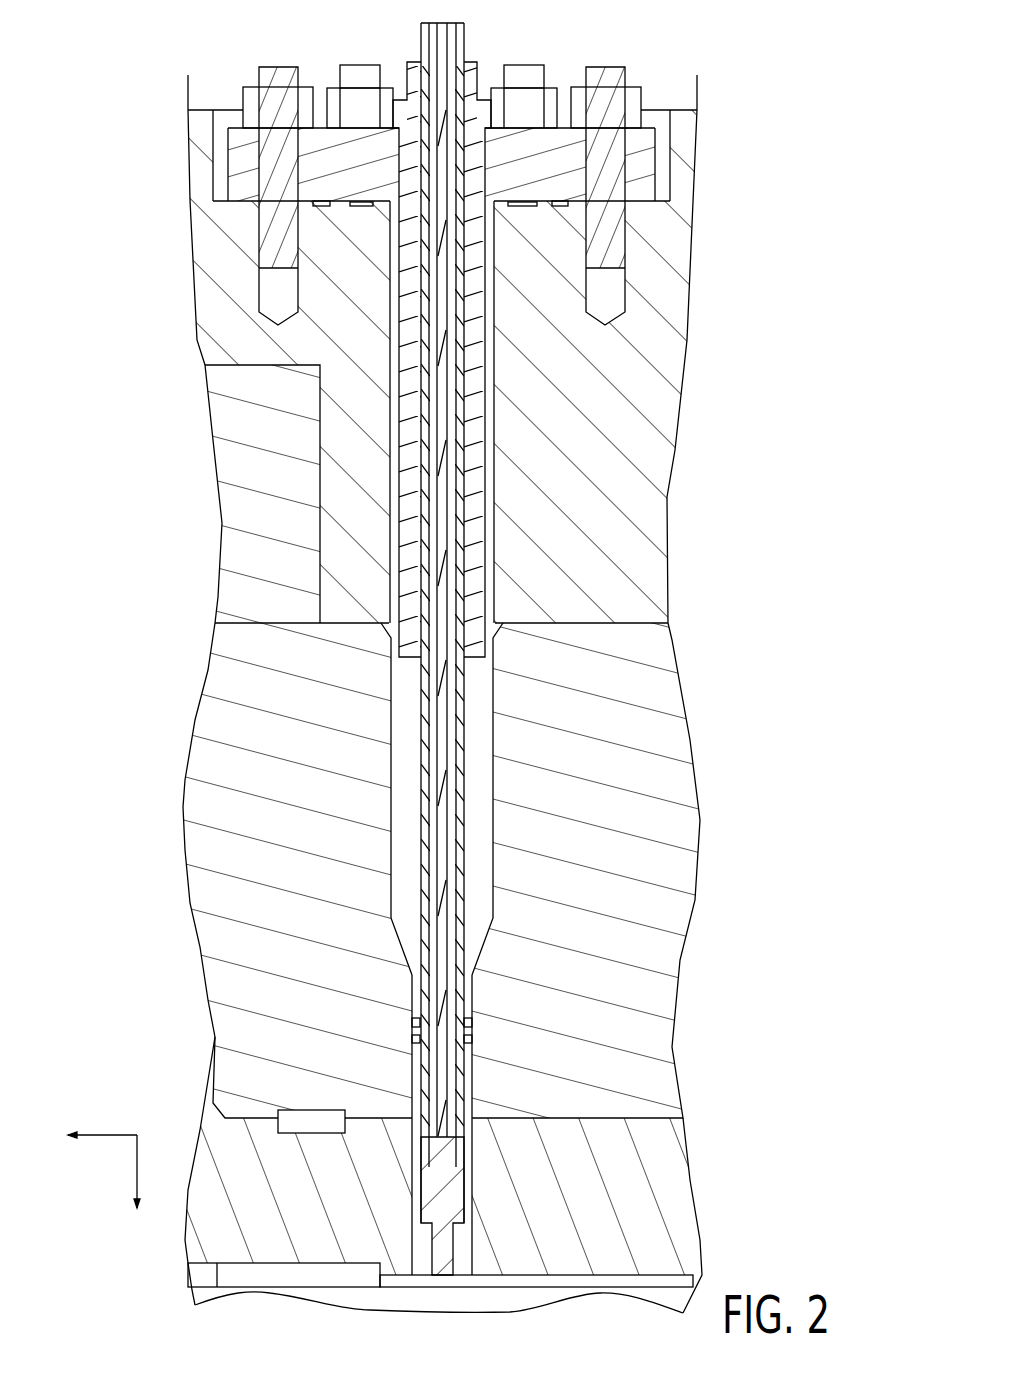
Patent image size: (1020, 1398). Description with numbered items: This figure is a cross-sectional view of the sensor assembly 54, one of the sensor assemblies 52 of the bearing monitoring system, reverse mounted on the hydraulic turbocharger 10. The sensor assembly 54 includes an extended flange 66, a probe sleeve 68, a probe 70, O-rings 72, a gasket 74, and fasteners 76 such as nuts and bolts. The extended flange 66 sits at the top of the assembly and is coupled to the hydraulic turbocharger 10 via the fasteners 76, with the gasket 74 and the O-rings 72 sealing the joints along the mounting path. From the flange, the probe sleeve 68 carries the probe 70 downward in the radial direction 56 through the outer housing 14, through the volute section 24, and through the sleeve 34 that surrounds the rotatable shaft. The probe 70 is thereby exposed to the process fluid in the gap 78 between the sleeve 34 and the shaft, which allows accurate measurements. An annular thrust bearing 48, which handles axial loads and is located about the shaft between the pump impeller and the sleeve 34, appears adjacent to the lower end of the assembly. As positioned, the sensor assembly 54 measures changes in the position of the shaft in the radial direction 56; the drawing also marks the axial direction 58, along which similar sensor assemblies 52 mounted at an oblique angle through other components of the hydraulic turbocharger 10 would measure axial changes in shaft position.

The hydraulic turbocharger 10 is at (727, 115).
The outer housing 14 is at (658, 463).
The volute section 24 is at (688, 836).
The sleeve 34 is at (667, 1188).
The annular thrust bearing 48 is at (293, 1277).
The sensor assembly 52 is at (555, 52).
The sensor assembly 54 is at (327, 53).
The radial direction 56 is at (137, 1168).
The axial direction 58 is at (107, 1135).
The extended flange 66 is at (645, 162).
The probe sleeve 68 is at (460, 778).
The probe 70 is at (447, 1177).
The O-rings 72 is at (480, 1037).
The gasket 74 is at (523, 207).
The fasteners 76 is at (527, 63).
The gap 78 is at (455, 1288).